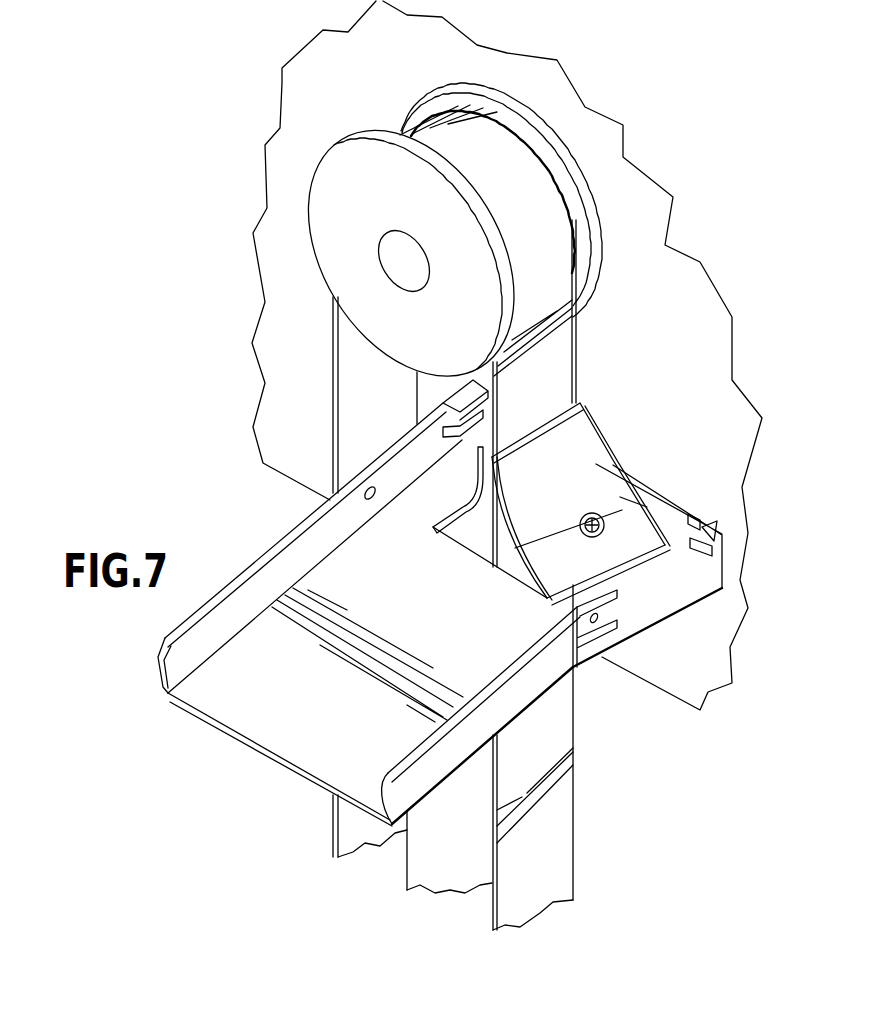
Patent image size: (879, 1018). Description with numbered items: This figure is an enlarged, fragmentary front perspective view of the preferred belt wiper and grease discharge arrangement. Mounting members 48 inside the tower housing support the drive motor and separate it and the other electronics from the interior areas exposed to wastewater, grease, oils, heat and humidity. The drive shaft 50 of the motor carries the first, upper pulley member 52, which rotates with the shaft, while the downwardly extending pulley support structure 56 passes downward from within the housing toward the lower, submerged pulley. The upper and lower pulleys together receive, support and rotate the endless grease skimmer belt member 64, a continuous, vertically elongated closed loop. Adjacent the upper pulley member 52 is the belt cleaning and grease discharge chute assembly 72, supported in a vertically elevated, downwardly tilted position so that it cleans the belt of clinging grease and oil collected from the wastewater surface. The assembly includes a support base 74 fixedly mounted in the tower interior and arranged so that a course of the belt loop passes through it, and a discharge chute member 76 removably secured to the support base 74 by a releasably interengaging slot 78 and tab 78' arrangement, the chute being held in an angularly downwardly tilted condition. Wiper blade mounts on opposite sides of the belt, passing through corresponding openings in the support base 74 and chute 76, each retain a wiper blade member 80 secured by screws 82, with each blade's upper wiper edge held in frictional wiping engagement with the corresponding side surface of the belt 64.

The mounting members 48 is at (514, 65).
The drive shaft 50 is at (393, 228).
The first, upper pulley member 52 is at (345, 138).
The pulley support structure 56 is at (407, 868).
The endless grease skimmer belt member 64 is at (578, 348).
The belt cleaning and grease discharge chute assembly 72 is at (236, 538).
The support base 74 is at (652, 633).
The discharge chute member 76 is at (547, 690).
The slot 78 is at (535, 469).
The tab 78' is at (617, 462).
The wiper blade member 80 is at (592, 430).
The screws 82 is at (587, 512).